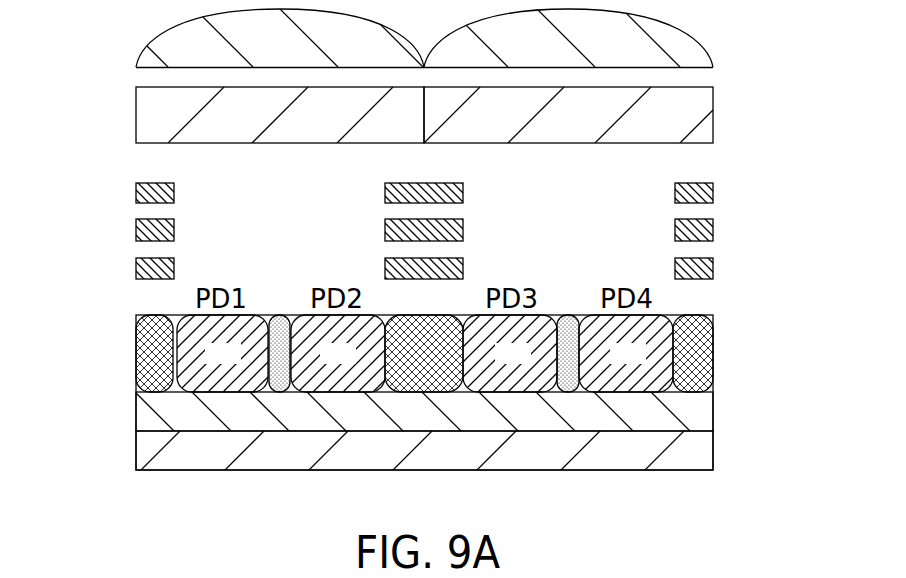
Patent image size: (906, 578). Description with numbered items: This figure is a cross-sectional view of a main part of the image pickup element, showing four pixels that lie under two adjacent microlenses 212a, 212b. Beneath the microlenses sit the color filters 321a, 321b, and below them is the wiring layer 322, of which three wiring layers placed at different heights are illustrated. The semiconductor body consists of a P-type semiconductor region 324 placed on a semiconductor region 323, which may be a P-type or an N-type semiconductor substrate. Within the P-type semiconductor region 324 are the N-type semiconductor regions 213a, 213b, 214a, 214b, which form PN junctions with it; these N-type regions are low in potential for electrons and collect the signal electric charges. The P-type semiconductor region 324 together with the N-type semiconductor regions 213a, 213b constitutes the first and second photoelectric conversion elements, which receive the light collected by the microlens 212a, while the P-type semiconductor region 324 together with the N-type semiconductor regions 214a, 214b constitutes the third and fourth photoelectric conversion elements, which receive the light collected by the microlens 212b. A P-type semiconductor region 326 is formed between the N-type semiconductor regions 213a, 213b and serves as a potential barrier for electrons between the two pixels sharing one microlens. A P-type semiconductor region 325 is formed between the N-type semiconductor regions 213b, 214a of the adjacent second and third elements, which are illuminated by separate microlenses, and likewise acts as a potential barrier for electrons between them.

The microlens 212a is at (140, 52).
The microlens 212b is at (694, 52).
The color filter 321a is at (150, 118).
The color filter 321b is at (698, 130).
The wiring layer 322 is at (130, 183).
The semiconductor region 323 is at (145, 444).
The P-type semiconductor region 324 is at (145, 412).
The P-type semiconductor region 325 is at (145, 361).
The P-type semiconductor region 326 is at (278, 393).
The N-type semiconductor region 213a is at (193, 393).
The N-type semiconductor region 213b is at (328, 393).
The N-type semiconductor region 214a is at (500, 393).
The N-type semiconductor region 214b is at (630, 393).